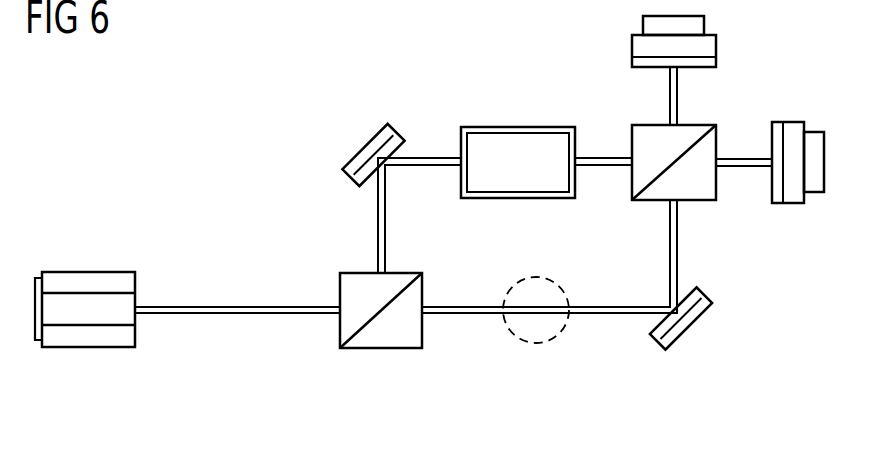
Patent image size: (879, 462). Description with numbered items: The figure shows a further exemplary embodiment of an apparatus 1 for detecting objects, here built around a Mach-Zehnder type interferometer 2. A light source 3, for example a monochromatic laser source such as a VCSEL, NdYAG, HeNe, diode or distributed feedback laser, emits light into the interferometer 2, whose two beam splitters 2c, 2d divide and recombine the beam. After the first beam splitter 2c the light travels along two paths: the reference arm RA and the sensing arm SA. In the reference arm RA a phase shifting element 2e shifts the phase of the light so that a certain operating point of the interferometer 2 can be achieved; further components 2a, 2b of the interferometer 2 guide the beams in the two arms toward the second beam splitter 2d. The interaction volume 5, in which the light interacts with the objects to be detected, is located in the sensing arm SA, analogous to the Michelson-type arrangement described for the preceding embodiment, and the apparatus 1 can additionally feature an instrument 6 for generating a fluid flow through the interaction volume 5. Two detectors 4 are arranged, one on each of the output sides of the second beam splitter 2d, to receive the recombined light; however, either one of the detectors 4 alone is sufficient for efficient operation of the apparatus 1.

The apparatus 1 is at (50, 212).
The Mach-Zehnder type interferometer 2 is at (822, 391).
The mirror 2a is at (694, 322).
The mirror 2b is at (364, 150).
The beam splitter 2c is at (348, 328).
The second beam splitter 2d is at (702, 188).
The phase shifting element 2e is at (523, 142).
The light source 3 is at (88, 282).
The detector 4 is at (697, 26).
The interaction volume 5 is at (525, 336).
The instrument 6 is at (565, 328).
The reference arm RA is at (434, 158).
The sensing arm SA is at (450, 306).